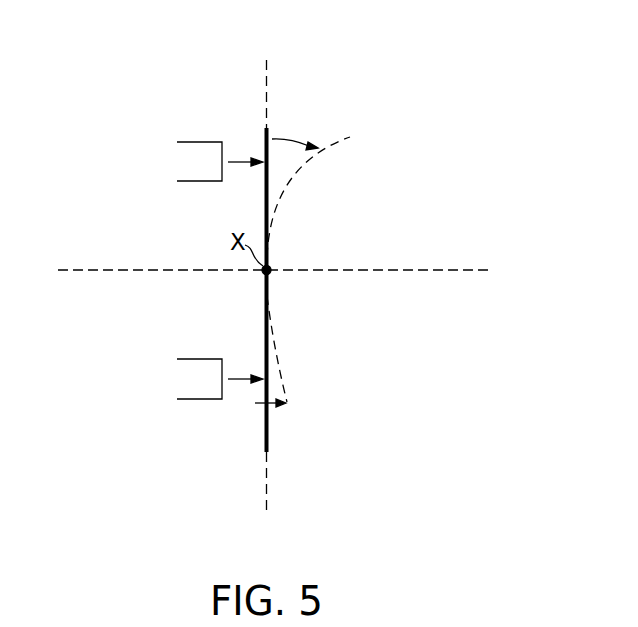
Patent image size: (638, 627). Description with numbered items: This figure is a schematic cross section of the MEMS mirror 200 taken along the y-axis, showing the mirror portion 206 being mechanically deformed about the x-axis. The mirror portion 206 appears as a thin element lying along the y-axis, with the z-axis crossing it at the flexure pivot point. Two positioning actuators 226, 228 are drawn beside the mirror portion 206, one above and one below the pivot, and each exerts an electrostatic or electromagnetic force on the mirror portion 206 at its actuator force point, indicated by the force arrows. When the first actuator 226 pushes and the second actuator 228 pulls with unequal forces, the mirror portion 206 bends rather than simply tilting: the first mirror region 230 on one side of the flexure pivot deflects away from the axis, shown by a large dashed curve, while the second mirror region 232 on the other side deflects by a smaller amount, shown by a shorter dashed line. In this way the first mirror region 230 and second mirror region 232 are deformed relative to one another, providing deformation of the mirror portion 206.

The MEMS mirror 200 is at (273, 270).
The mirror portion 206 is at (325, 257).
The first actuator 226 is at (190, 141).
The second actuator 228 is at (190, 358).
The first mirror region 230 is at (351, 138).
The second mirror region 232 is at (289, 403).